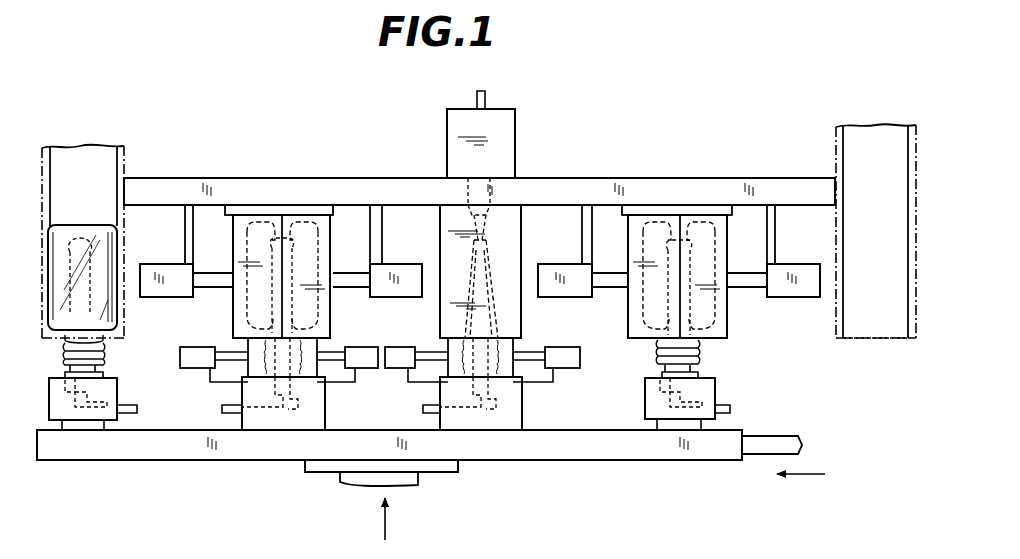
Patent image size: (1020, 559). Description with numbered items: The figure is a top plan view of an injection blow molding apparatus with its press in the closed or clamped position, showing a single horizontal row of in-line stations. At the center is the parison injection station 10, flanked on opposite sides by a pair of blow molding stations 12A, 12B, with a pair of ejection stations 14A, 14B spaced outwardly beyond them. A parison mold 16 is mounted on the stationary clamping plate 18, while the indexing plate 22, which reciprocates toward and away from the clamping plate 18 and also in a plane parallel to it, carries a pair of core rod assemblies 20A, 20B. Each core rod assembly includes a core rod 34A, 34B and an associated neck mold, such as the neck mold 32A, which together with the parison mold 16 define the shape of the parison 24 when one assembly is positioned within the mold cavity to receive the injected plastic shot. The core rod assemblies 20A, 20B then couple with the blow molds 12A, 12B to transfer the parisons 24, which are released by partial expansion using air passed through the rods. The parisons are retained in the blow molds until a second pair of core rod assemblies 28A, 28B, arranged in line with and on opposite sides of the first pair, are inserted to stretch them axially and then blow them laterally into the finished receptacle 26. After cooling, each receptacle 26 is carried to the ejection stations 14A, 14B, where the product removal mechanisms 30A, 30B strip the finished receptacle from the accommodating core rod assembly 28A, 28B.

The parison injection station 10 is at (520, 152).
The blow molding station 12A is at (338, 234).
The blow molding station 12B is at (622, 236).
The ejection station 14A is at (130, 152).
The ejection station 14B is at (830, 158).
The parison mold 16 is at (522, 244).
The clamping plate 18 is at (700, 190).
The core rod assembly 20A is at (315, 412).
The core rod assembly 20B is at (530, 413).
The indexing plate 22 is at (660, 450).
The parison 24 is at (497, 322).
The receptacle 26 is at (313, 322).
The core rod assembly 28A is at (122, 420).
The core rod assembly 28B is at (720, 420).
The product removal mechanism 30A is at (42, 158).
The product removal mechanism 30B is at (932, 107).
The neck mold 32A is at (257, 365).
The core rod 34A is at (273, 295).
The core rod 34B is at (470, 262).